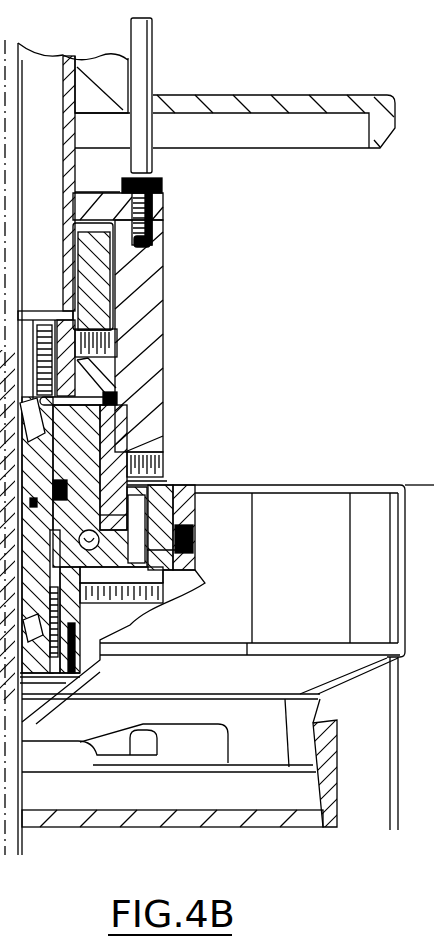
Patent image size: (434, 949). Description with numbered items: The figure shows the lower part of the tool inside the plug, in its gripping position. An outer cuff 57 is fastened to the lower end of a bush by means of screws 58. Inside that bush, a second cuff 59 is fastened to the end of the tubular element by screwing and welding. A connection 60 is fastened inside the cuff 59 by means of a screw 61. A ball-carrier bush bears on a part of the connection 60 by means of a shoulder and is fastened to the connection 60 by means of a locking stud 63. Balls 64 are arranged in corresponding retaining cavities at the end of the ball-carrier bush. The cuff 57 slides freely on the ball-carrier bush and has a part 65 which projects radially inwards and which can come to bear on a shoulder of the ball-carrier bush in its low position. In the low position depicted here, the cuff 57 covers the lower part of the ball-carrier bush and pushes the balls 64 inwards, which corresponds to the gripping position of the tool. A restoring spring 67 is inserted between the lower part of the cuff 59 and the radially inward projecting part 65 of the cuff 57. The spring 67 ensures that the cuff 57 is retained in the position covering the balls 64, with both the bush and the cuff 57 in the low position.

The cuff 57 is at (125, 450).
The screws 58 is at (165, 470).
The cuff 59 is at (102, 283).
The connection 60 is at (100, 368).
The screw 61 is at (115, 325).
The locking stud 63 is at (75, 376).
The balls 64 is at (98, 540).
The radially inward projecting part 65 is at (110, 460).
The restoring spring 67 is at (105, 401).